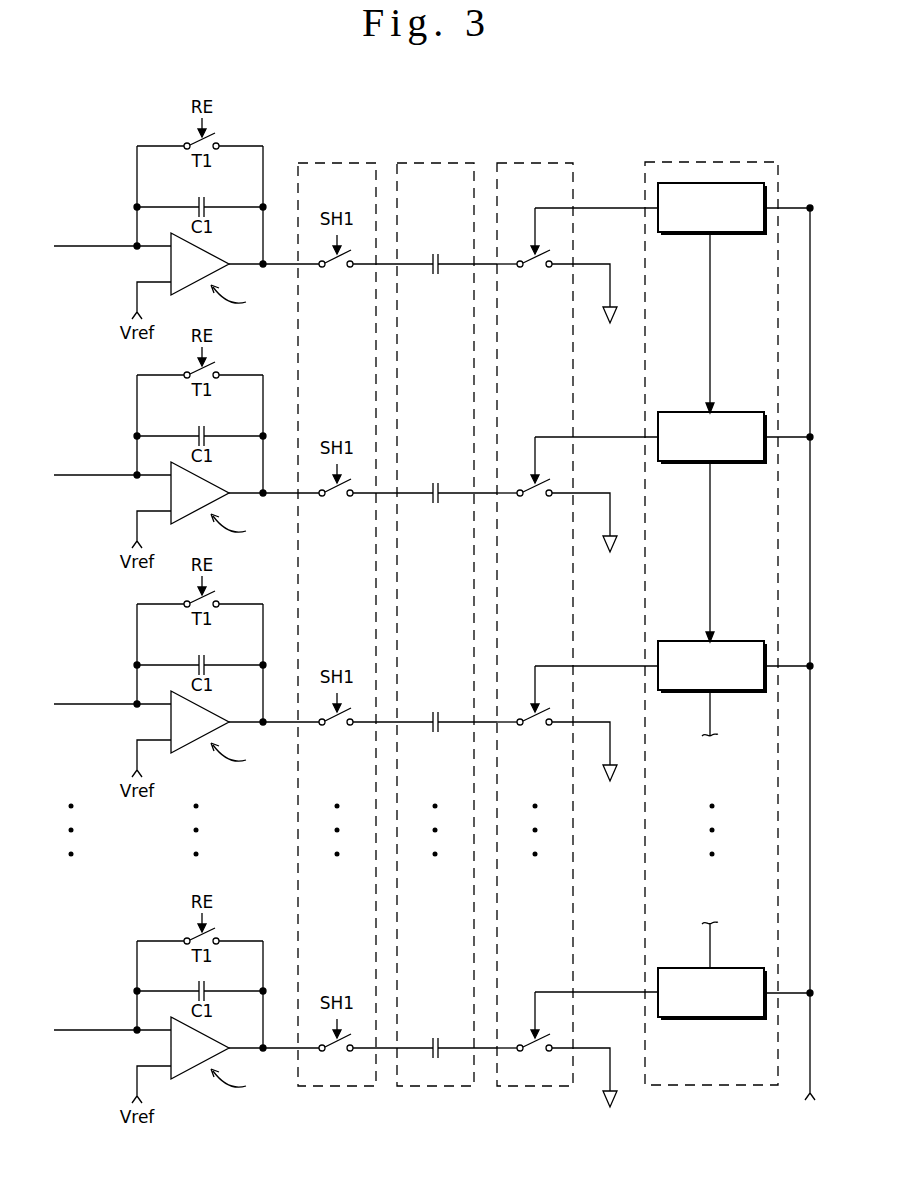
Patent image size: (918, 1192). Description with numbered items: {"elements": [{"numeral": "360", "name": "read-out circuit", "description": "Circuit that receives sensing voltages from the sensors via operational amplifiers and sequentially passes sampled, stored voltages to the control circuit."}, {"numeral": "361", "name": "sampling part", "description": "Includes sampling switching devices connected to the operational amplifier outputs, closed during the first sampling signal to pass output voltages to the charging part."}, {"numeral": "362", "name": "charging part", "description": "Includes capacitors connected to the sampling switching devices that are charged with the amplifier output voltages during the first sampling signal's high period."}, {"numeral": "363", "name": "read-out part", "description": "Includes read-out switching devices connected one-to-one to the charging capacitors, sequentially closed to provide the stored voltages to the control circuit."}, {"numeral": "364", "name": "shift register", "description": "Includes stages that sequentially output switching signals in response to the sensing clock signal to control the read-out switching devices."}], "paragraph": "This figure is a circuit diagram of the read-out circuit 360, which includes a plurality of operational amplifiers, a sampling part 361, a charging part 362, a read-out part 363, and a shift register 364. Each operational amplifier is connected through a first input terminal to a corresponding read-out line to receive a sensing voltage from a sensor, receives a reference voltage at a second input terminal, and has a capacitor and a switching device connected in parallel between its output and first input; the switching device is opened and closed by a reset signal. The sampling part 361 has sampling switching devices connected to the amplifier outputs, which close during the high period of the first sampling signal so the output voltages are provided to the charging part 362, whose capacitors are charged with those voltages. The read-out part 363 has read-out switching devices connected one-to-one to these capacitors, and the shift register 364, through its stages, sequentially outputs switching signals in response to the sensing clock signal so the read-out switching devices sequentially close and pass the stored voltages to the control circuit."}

The readout circuit 360 is at (790, 104).
The sample and hold switch unit 361 is at (336, 1087).
The capacitor unit 362 is at (436, 1087).
The readout switch unit 363 is at (536, 1087).
The shift register unit 364 is at (713, 1086).